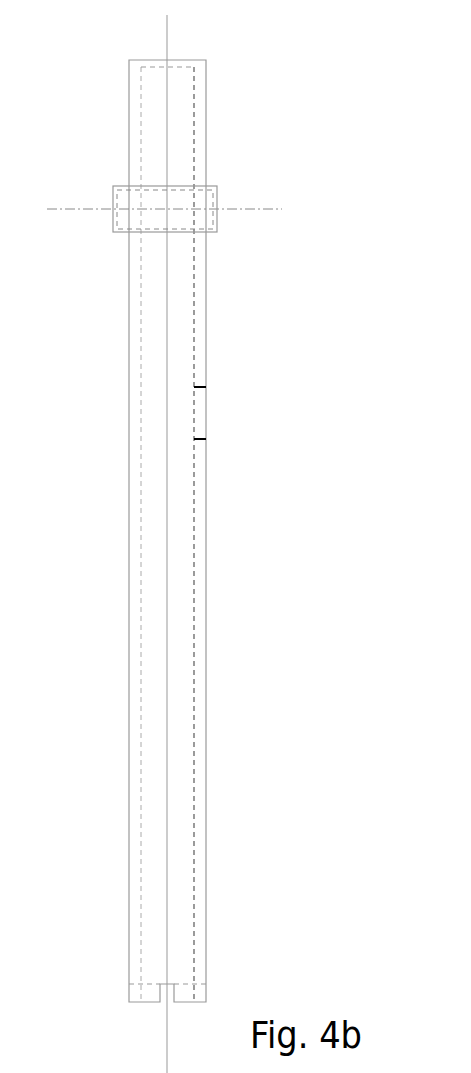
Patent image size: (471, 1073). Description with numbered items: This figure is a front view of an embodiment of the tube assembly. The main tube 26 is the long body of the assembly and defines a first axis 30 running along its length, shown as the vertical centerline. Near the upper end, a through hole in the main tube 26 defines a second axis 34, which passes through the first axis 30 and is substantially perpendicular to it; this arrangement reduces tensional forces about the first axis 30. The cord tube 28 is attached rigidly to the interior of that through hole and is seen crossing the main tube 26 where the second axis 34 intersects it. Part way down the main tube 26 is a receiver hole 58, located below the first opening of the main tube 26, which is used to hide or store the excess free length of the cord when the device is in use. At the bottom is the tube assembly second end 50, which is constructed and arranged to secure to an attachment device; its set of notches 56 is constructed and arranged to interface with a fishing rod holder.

The main tube 26 is at (153, 647).
The cord tube 28 is at (205, 230).
The first axis 30 is at (172, 43).
The second axis 34 is at (83, 208).
The tube assembly second end 50 is at (182, 949).
The set of notches 56 is at (133, 1001).
The receiver hole 58 is at (200, 413).